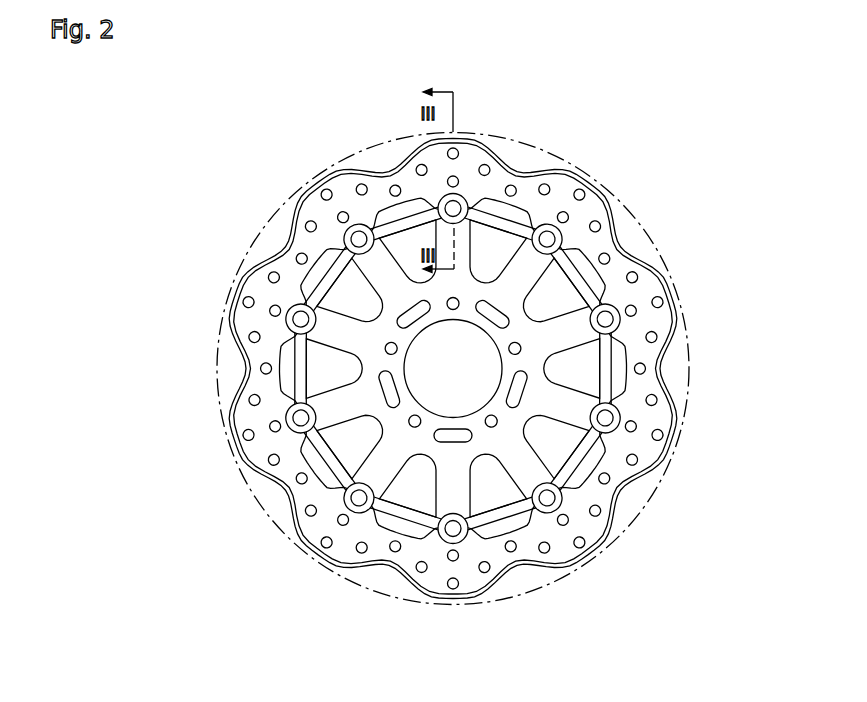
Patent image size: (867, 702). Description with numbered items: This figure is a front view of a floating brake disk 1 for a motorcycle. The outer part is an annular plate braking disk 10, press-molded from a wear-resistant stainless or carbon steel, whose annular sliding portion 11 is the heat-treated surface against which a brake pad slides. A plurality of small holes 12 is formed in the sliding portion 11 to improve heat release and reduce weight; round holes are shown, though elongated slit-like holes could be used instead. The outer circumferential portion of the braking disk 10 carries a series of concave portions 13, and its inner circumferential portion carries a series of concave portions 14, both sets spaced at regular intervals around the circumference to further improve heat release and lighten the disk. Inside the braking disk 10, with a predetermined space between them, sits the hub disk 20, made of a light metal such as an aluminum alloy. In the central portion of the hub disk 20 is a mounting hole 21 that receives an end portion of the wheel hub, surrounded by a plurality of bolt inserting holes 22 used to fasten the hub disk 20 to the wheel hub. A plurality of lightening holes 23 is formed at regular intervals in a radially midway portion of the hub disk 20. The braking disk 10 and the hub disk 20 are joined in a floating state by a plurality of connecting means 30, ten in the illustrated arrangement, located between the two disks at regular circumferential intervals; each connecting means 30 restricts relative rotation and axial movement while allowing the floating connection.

The floating brake disk 1 is at (611, 156).
The braking disk 10 is at (433, 347).
The sliding portion 11 is at (593, 208).
The small holes 12 is at (660, 300).
The concave portions 13 is at (643, 275).
The concave portions 14 is at (588, 260).
The hub disk 20 is at (453, 330).
The mounting hole 21 is at (439, 369).
The bolt inserting holes 22 is at (456, 302).
The lightening holes 23 is at (339, 308).
The connecting means 30 is at (620, 322).